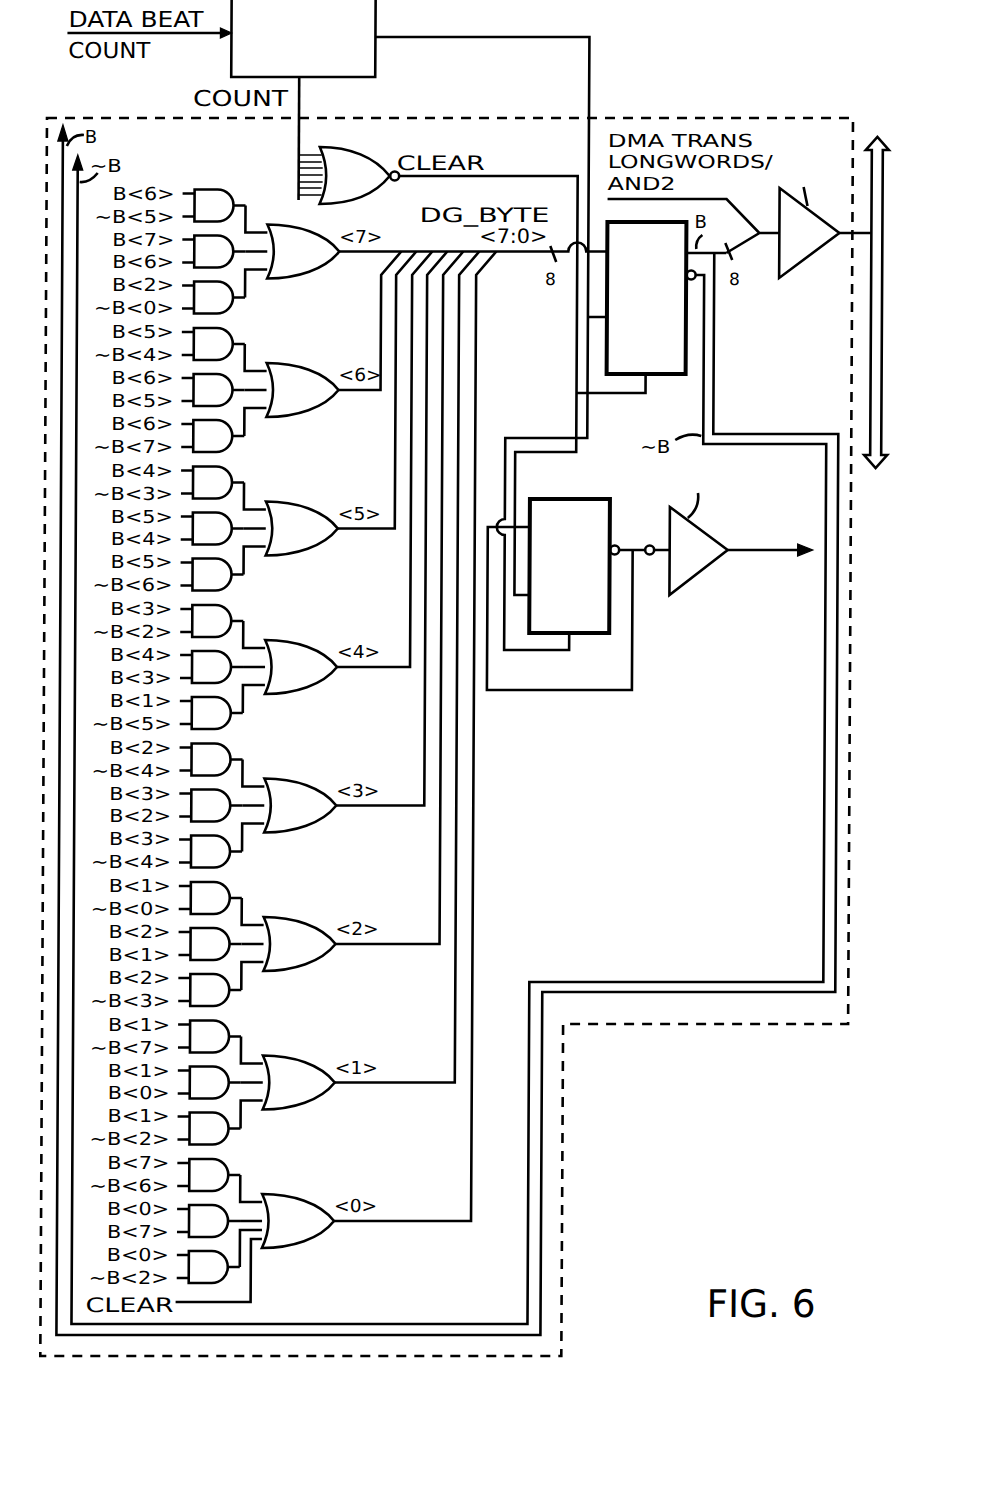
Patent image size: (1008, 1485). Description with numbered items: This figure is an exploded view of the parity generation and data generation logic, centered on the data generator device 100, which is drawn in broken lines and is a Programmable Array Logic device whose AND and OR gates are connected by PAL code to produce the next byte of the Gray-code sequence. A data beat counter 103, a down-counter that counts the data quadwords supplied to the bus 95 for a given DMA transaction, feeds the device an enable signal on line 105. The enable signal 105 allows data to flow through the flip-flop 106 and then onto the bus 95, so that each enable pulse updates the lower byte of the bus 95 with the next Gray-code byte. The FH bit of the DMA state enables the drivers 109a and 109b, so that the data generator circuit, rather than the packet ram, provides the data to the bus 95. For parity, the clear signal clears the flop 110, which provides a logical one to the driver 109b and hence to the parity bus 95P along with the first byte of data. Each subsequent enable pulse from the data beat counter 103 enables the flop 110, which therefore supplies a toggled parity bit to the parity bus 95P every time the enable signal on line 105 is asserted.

The data generator device 100 is at (762, 112).
The data beat counter 103 is at (376, 17).
The enable signal line 105 is at (589, 69).
The byte flop register 106 is at (670, 376).
The driver 109a is at (803, 262).
The driver 109b is at (694, 580).
The flop 110 is at (581, 499).
The bus 95 is at (872, 392).
The parity bus 95P is at (771, 553).